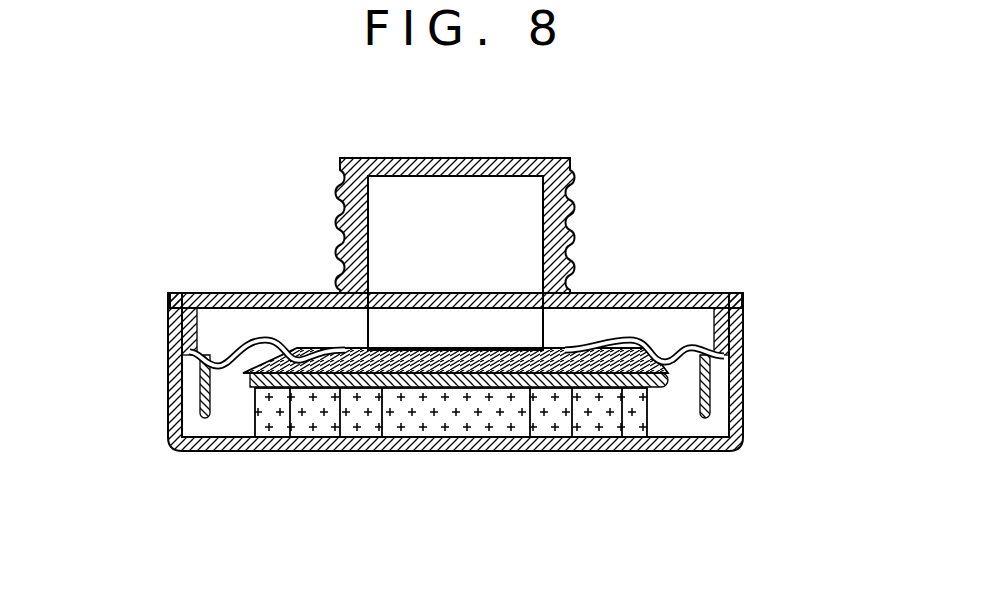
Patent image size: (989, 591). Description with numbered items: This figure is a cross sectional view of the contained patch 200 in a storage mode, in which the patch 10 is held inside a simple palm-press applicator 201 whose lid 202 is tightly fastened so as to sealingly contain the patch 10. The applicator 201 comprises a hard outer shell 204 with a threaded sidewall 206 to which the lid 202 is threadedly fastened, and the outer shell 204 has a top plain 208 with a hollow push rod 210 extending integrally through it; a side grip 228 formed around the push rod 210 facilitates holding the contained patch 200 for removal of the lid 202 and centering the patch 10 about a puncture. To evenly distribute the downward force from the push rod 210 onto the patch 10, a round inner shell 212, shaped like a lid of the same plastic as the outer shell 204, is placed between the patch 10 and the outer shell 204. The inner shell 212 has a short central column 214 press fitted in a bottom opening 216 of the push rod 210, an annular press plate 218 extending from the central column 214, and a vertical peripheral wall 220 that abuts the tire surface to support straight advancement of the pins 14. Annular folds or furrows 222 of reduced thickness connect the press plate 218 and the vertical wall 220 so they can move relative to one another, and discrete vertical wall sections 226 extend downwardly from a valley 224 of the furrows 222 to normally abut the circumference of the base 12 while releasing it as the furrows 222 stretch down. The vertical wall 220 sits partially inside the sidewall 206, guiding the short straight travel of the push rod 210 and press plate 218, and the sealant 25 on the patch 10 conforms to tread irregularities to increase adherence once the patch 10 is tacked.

The contained patch 200 is at (640, 156).
The palm-press applicator 201 is at (752, 310).
The lid 202 is at (453, 452).
The hard outer shell 204 is at (190, 293).
The threaded sidewall 206 is at (172, 332).
The top plain 208 is at (715, 293).
The hollow push rod 210 is at (465, 158).
The inner shell 212 is at (322, 348).
The central column 214 is at (418, 348).
The bottom opening 216 is at (530, 348).
The annular press plate 218 is at (585, 350).
The vertical peripheral wall 220 is at (205, 392).
The annular folds or furrows 222 is at (260, 355).
The valley 224 is at (192, 293).
The discrete vertical wall sections 226 is at (670, 380).
The side grip 228 is at (345, 172).
The patch 10 is at (655, 402).
The base 12 is at (252, 388).
The pins 14 is at (332, 437).
The sealant 25 is at (633, 427).